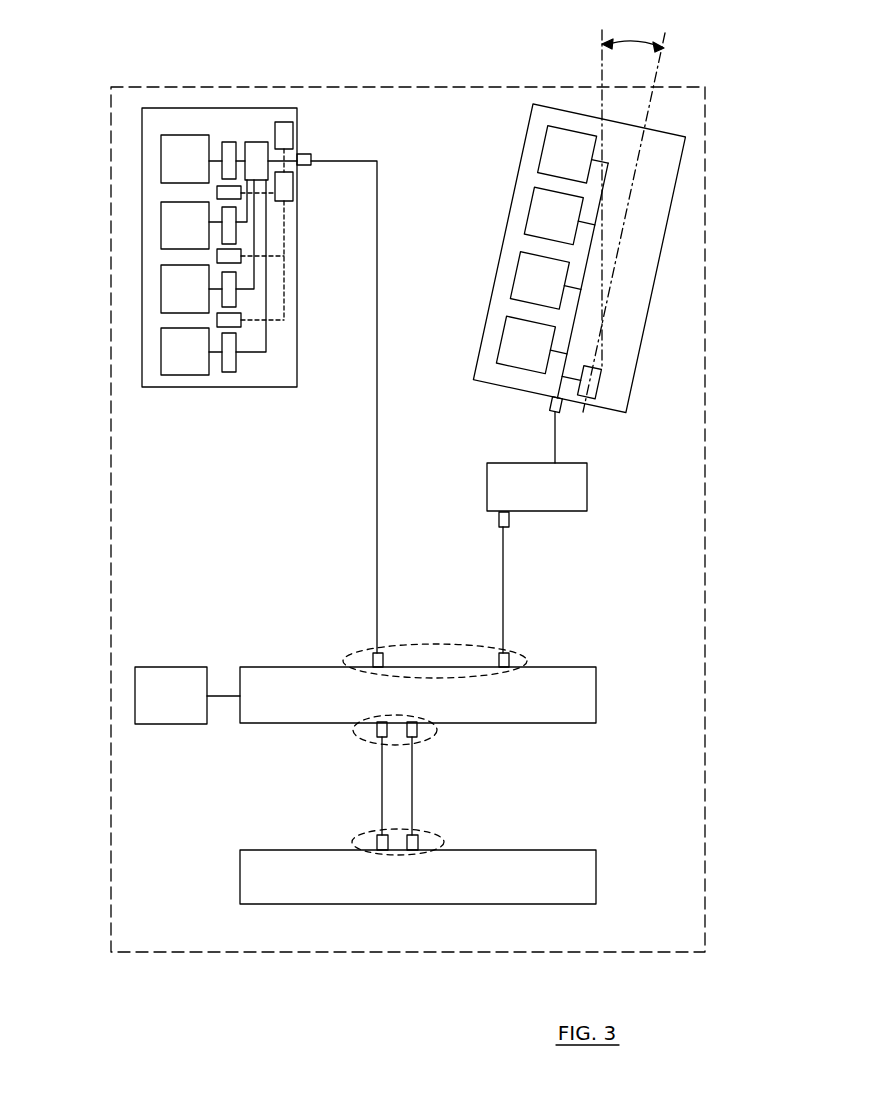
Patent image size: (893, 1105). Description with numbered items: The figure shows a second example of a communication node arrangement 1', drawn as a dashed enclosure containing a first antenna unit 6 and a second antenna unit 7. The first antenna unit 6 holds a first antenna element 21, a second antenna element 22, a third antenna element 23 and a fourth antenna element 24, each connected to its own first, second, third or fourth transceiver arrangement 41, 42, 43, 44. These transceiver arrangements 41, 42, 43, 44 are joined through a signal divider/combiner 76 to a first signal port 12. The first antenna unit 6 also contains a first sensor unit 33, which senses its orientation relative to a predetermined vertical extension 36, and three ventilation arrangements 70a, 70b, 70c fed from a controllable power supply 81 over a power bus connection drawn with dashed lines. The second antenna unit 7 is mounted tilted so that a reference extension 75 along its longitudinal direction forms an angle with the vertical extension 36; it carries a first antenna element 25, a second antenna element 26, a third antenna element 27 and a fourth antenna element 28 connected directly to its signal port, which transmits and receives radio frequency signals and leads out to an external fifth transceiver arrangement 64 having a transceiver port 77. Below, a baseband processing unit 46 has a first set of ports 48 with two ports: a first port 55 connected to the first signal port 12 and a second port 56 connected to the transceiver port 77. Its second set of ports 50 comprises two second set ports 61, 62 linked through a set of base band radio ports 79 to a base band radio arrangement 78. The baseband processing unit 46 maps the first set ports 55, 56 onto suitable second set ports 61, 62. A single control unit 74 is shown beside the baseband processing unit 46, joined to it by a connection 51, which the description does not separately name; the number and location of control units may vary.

The communication node arrangement 1' is at (384, 494).
The first antenna unit 6 is at (142, 163).
The second antenna unit 7 is at (610, 265).
The first signal port 12 is at (310, 158).
The first antenna element 21 is at (172, 169).
The second antenna element 22 is at (172, 236).
The third antenna element 23 is at (172, 300).
The fourth antenna element 24 is at (172, 363).
The first antenna element 25 is at (567, 154).
The second antenna element 26 is at (553, 215).
The third antenna element 27 is at (539, 280).
The fourth antenna element 28 is at (525, 344).
The first sensor unit 33 is at (283, 137).
The vertical extension 36 is at (600, 72).
The first transceiver arrangement 41 is at (229, 152).
The second transceiver arrangement 42 is at (231, 232).
The third transceiver arrangement 43 is at (231, 300).
The fourth transceiver arrangement 44 is at (231, 363).
The baseband processing unit 46 is at (405, 701).
The first set of ports 48 is at (343, 658).
The second set of ports 50 is at (356, 738).
The connection 51 is at (149, 688).
The first port 55 is at (377, 652).
The second port 56 is at (503, 652).
The second set port 61 is at (376, 730).
The second set port 62 is at (406, 735).
The fifth transceiver arrangement 64 is at (524, 498).
The ventilation arrangement 70a is at (229, 193).
The ventilation arrangement 70b is at (229, 257).
The ventilation arrangement 70c is at (229, 320).
The control unit 74 is at (158, 703).
The reference extension 75 is at (650, 108).
The signal divider/combiner 76 is at (262, 158).
The transceiver port 77 is at (510, 518).
The base band radio arrangement 78 is at (405, 882).
The base band radio ports 79 is at (445, 840).
The power supply 81 is at (284, 186).